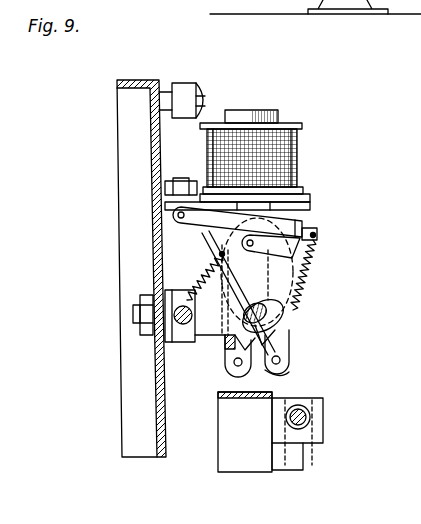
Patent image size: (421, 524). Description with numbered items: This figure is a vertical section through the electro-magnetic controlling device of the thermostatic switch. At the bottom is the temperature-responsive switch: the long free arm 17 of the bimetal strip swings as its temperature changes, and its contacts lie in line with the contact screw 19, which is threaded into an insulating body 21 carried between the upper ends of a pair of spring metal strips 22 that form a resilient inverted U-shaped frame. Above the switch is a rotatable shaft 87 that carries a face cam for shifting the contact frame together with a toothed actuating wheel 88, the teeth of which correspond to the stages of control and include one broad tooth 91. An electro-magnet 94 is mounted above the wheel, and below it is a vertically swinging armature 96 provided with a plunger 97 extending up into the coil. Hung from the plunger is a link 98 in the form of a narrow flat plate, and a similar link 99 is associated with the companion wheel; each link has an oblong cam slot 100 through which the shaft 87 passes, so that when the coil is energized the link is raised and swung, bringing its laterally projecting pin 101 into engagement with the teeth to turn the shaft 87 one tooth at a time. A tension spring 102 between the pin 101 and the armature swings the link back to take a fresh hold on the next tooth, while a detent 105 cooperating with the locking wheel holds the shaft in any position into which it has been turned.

The electro-magnet 94 is at (302, 161).
The armature 96 is at (300, 216).
The plunger 97 is at (305, 207).
The detent 105 is at (316, 249).
The tension spring 102 is at (302, 276).
The broad tooth 91 is at (225, 337).
The toothed actuating wheel 88 is at (298, 326).
The rotatable shaft 87 is at (257, 278).
The cam slot 100 is at (300, 313).
The pin 101 is at (282, 361).
The link 98 is at (290, 345).
The link 99 is at (283, 375).
The spring metal strips 22 is at (225, 470).
The contact screw 19 is at (310, 423).
The insulating body 21 is at (312, 410).
The free arm of bimetal strip 17 is at (318, 452).